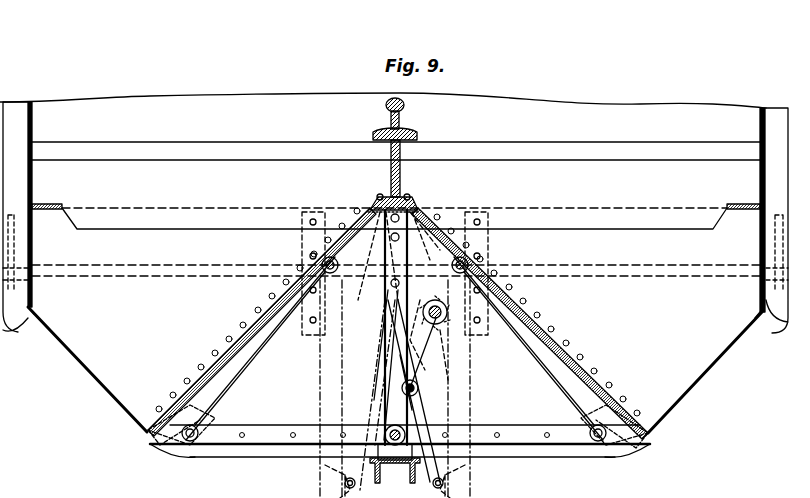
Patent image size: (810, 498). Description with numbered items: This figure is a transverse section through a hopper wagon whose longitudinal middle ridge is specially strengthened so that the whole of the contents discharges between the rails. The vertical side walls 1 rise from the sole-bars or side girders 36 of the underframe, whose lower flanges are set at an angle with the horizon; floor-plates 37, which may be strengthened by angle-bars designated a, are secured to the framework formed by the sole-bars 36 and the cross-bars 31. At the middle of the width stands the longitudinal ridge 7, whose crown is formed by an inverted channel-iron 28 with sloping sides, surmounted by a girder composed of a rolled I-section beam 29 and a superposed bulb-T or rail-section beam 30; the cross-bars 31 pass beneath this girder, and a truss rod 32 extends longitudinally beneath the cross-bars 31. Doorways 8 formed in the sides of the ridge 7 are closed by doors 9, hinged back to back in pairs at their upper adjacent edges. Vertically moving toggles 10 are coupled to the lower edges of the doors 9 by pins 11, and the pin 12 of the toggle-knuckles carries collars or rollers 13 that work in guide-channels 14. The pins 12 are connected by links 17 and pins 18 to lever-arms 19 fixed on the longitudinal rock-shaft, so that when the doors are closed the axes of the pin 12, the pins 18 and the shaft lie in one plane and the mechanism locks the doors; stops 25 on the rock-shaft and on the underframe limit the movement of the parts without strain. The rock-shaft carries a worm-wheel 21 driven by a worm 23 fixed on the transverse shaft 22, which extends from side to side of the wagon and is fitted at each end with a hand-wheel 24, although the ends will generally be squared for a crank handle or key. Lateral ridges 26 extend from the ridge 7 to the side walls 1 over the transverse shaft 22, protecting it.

The vertical side walls 1 is at (760, 130).
The lateral ridges 26 is at (606, 150).
The transverse shaft 22 is at (650, 271).
The hand-wheel 24 is at (782, 328).
The sole-bars 36 is at (760, 310).
The floor-plates 37 is at (648, 430).
The angle-bar a is at (409, 337).
The worm 23 is at (460, 232).
The doorways 8 is at (640, 420).
The doors 9 is at (552, 372).
The toggles 10 is at (514, 440).
The pins 11 is at (596, 440).
The superposed beam 30 is at (400, 108).
The rolled beam 29 is at (400, 170).
The longitudinal ridge 7 is at (418, 200).
The inverted channel-iron 28 is at (362, 216).
The worm-wheel 21 is at (384, 292).
The guide-channels 14 is at (378, 336).
The stops 25 is at (432, 330).
The links 17 is at (398, 406).
The lever-arms 19 is at (420, 380).
The pins 18 is at (420, 388).
The toggle-knuckle pin 12 is at (406, 432).
The collars or rollers 13 is at (378, 446).
The truss rod 32 is at (406, 472).
The cross-bars 31 is at (284, 462).